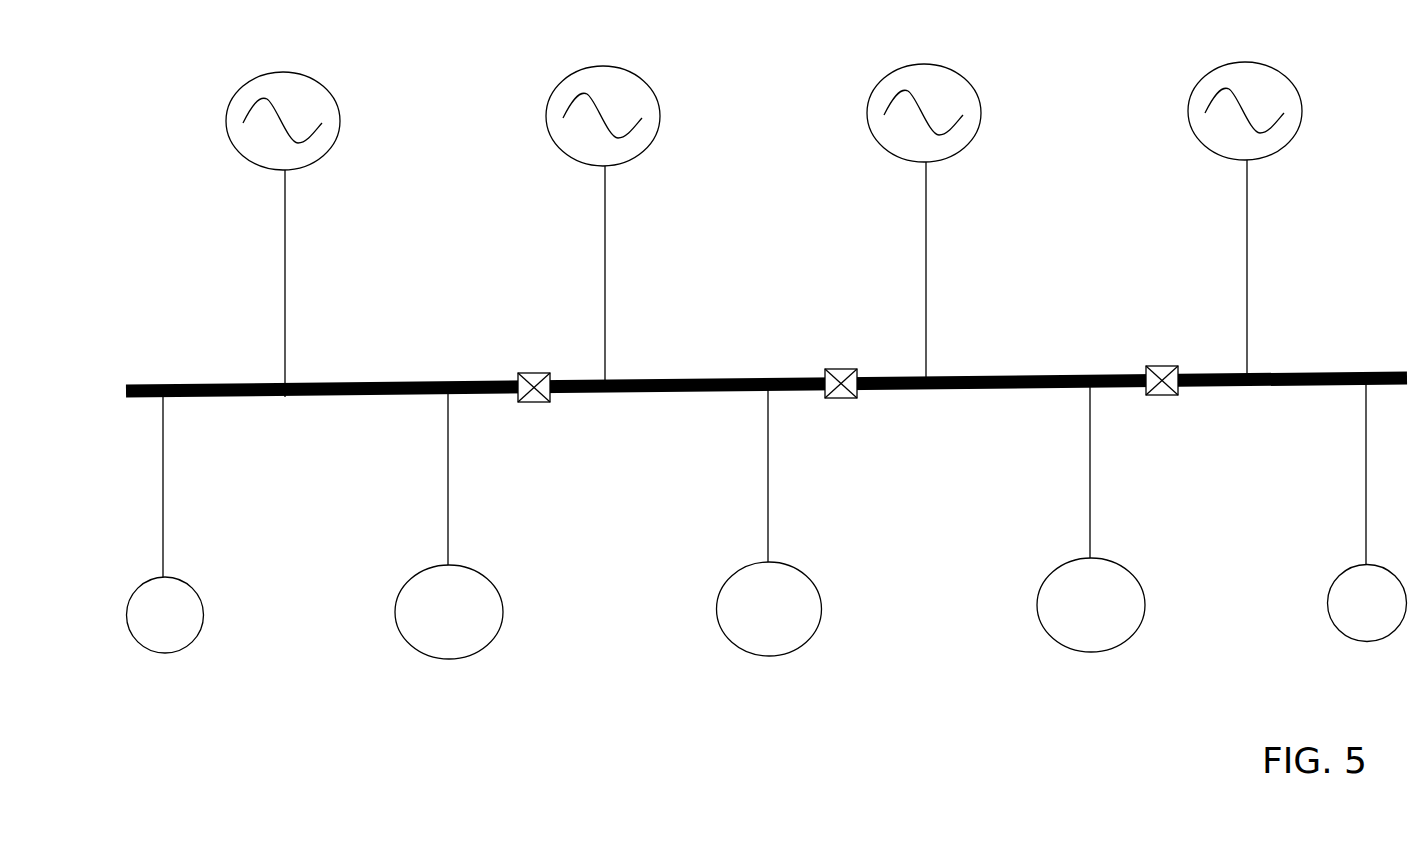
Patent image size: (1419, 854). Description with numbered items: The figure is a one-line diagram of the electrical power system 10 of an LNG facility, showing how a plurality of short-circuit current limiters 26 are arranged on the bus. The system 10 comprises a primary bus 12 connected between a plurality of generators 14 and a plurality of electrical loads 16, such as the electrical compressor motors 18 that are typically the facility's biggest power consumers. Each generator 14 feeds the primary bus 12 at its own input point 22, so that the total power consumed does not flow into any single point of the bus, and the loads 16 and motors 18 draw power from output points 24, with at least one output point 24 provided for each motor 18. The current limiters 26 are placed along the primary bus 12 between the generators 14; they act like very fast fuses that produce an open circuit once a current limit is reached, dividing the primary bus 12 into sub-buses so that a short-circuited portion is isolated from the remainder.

The electrical power system 10 is at (601, 713).
The primary bus 12 is at (1328, 372).
The generators 14 is at (253, 145).
The electrical loads 16 is at (188, 630).
The electrical compressor motors 18 is at (723, 598).
The input points 22 is at (290, 397).
The output points 24 is at (443, 383).
The short-circuit current limiters 26 is at (842, 375).